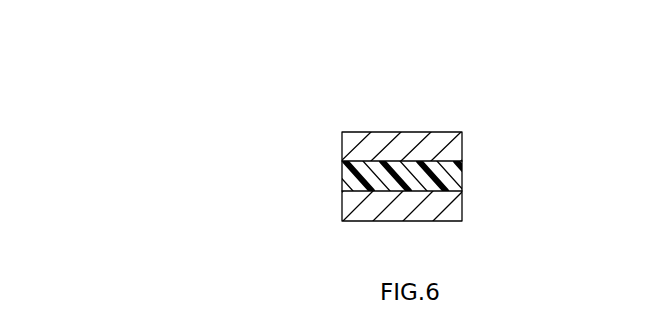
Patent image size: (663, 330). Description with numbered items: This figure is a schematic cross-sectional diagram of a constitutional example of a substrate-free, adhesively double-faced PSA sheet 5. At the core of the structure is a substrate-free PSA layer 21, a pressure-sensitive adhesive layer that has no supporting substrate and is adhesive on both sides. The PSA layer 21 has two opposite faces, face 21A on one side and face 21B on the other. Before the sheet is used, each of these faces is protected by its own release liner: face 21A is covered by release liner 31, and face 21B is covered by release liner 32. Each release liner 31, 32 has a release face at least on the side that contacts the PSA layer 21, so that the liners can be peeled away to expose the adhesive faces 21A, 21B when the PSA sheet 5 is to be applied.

The PSA sheet 5 is at (442, 95).
The release liner 32 is at (462, 143).
The substrate-free PSA layer 21 is at (462, 173).
The release liner 31 is at (462, 208).
The face of PSA layer 21B is at (353, 161).
The face of PSA layer 21A is at (353, 191).